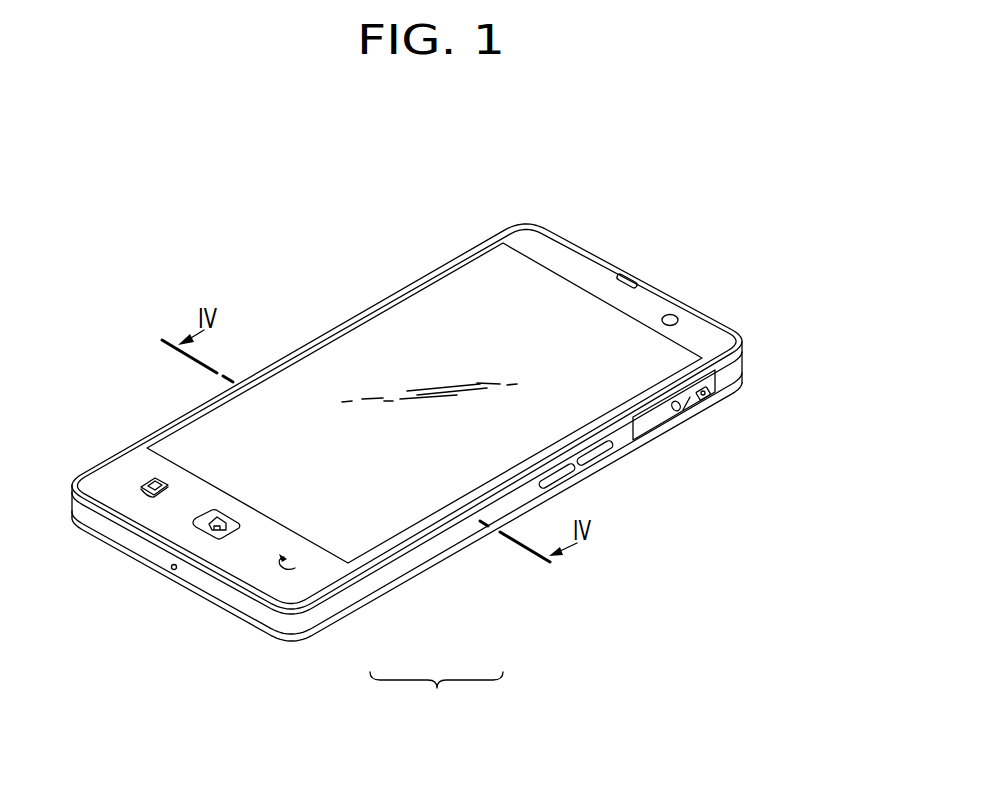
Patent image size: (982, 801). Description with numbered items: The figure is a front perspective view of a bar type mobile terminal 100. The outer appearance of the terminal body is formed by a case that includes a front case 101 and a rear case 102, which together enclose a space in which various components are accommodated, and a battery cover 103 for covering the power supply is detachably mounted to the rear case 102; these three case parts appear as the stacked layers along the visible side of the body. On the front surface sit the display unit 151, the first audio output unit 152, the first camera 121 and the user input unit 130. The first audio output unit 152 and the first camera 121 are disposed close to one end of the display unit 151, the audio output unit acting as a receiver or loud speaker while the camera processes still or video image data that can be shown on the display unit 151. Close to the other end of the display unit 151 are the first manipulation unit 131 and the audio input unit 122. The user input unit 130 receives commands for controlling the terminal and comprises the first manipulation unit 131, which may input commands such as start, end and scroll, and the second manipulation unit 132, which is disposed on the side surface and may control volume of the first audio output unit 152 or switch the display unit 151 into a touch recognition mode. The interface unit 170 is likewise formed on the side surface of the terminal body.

The mobile terminal 100 is at (346, 284).
The front case 101 is at (746, 342).
The rear case 102 is at (741, 368).
The battery cover 103 is at (744, 384).
The first camera 121 is at (673, 317).
The audio input unit 122 is at (172, 570).
The user input unit 130 is at (436, 694).
The first manipulation unit 131 is at (310, 566).
The second manipulation unit 132 is at (558, 480).
The display unit 151 is at (470, 292).
The first audio output unit 152 is at (638, 282).
The interface unit 170 is at (670, 412).